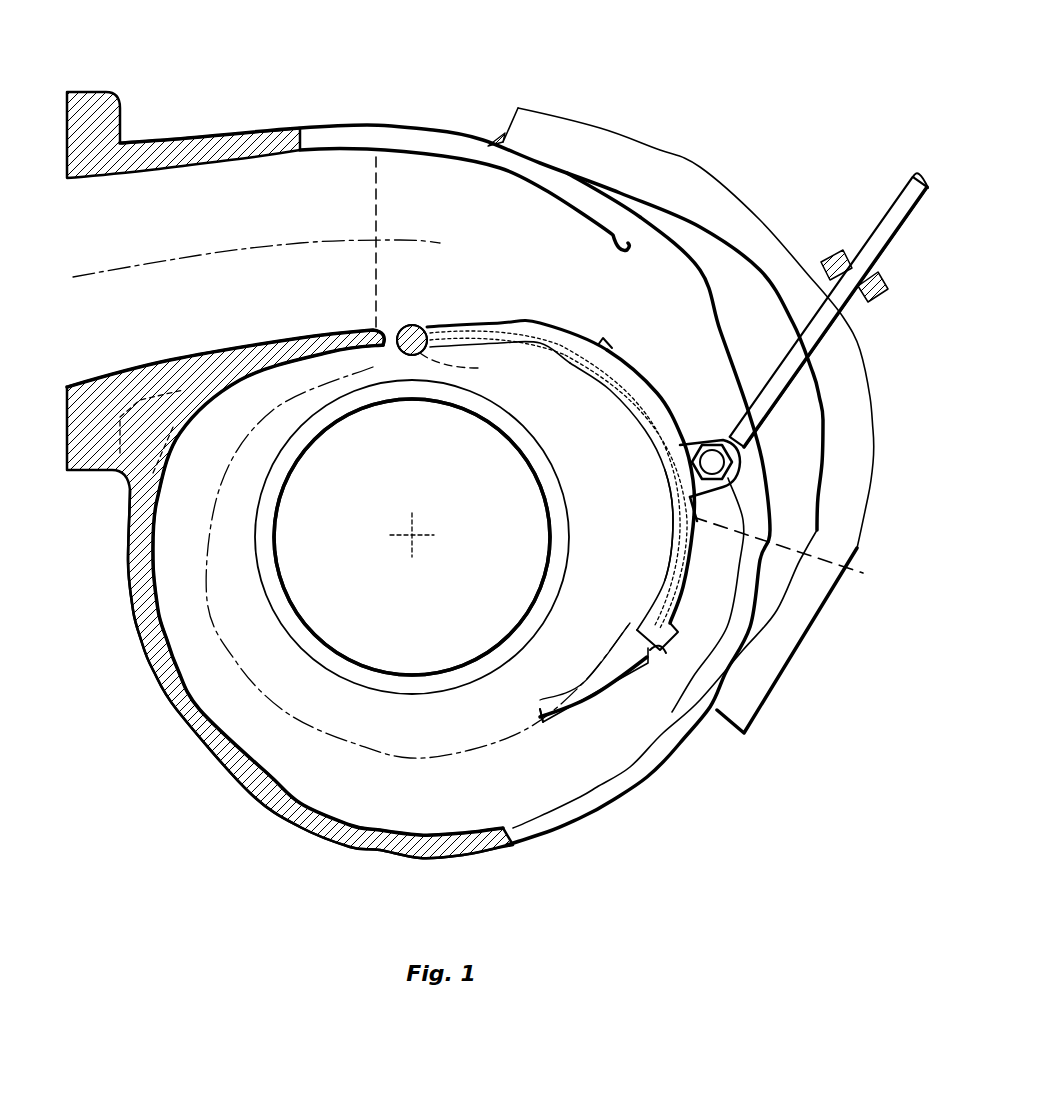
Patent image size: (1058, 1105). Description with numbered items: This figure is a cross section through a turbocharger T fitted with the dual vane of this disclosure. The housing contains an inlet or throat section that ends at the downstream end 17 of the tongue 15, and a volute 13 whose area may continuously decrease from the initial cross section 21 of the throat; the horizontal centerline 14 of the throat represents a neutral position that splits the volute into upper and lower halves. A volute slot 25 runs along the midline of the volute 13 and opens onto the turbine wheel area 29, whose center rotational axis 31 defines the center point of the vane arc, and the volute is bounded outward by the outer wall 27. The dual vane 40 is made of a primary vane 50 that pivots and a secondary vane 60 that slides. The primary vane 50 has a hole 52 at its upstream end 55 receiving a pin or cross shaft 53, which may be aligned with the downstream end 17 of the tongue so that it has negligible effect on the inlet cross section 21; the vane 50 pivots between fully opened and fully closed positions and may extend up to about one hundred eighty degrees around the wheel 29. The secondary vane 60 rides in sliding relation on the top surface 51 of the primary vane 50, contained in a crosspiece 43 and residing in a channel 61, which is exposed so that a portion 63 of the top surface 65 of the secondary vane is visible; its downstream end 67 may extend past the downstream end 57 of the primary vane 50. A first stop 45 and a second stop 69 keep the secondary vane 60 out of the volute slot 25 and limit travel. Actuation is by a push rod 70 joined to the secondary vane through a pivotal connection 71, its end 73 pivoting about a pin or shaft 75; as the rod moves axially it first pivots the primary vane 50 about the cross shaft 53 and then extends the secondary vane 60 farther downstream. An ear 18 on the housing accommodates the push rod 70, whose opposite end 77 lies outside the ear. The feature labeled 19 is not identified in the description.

The turbocharger T is at (310, 108).
The volute 13 is at (465, 205).
The horizontal centerline 14 is at (215, 250).
The tongue 15 is at (157, 362).
The downstream end of the tongue 17 is at (377, 327).
The ear 18 is at (617, 132).
The inlet flange 19 is at (67, 257).
The initial cross section of the throat 21 is at (373, 185).
The volute slot 25 is at (509, 422).
The outer wall of the volute 27 is at (617, 232).
The turbine wheel area 29 is at (338, 607).
The center rotational axis of the wheel 31 is at (410, 530).
The dual vane 40 is at (612, 430).
The crosspiece 43 is at (660, 398).
The first stop 45 is at (672, 637).
The primary vane 50 is at (493, 321).
The top surface of the primary vane 51 is at (577, 338).
The hole 52 is at (465, 367).
The cross shaft 53 is at (406, 360).
The upstream end of the primary vane 55 is at (407, 323).
The downstream end of the primary vane 57 is at (585, 661).
The secondary vane 60 is at (580, 720).
The channel 61 is at (692, 549).
The exposed portion of the top surface 63 is at (795, 556).
The top surface of the secondary vane 65 is at (595, 695).
The downstream end of the secondary vane 67 is at (540, 715).
The second stop 69 is at (650, 655).
The push rod 70 is at (878, 222).
The pivotal connection 71 is at (720, 490).
The end of the push rod 73 is at (740, 460).
The pin or shaft 75 is at (712, 452).
The outer end of the push rod 77 is at (932, 193).